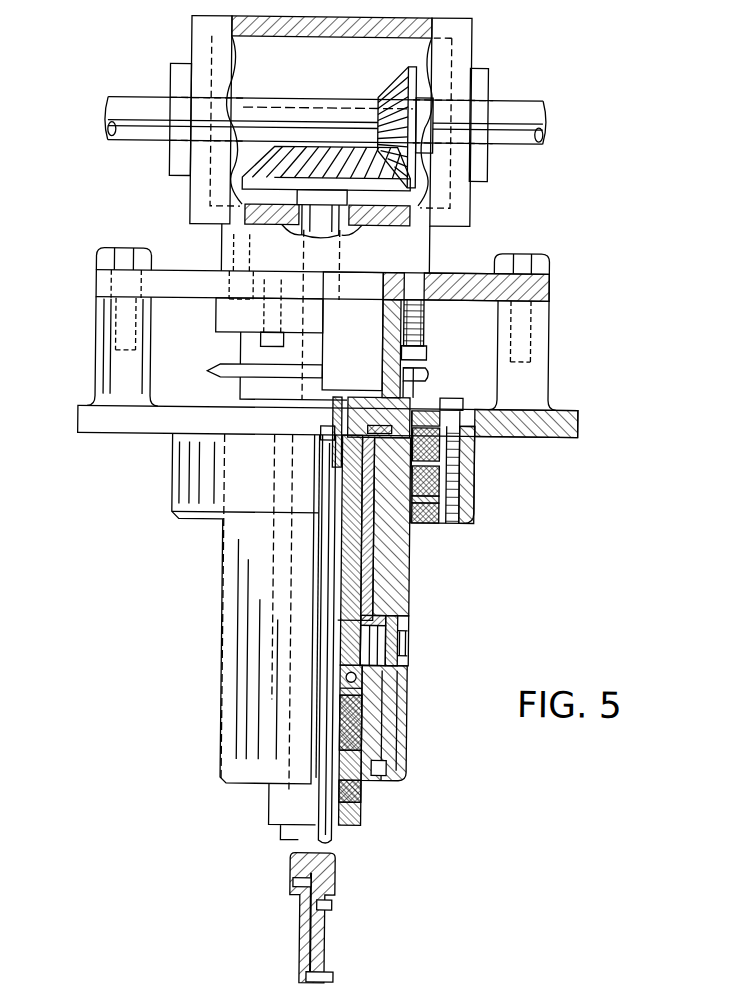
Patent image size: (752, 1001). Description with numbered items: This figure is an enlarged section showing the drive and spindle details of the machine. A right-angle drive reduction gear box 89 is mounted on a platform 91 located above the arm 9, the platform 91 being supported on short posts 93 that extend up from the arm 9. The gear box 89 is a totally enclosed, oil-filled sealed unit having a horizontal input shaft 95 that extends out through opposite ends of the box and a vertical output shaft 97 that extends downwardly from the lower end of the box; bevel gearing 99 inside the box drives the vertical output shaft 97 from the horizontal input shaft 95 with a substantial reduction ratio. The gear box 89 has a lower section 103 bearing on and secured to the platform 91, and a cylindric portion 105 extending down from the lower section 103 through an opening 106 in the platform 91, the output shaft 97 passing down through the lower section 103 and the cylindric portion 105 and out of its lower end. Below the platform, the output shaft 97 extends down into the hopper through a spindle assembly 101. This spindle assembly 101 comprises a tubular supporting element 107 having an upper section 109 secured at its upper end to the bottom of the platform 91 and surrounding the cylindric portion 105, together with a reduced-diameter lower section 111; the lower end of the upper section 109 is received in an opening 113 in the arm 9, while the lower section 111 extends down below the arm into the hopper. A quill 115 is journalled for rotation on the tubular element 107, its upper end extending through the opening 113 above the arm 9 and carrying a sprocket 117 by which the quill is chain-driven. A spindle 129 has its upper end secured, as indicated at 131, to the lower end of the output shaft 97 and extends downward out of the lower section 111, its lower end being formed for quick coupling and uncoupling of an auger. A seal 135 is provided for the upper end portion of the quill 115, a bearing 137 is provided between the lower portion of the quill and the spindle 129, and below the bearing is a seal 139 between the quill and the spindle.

The arm 9 is at (80, 419).
The right-angle drive reduction gear box 89 is at (472, 43).
The platform 91 is at (98, 285).
The short posts 93 is at (96, 356).
The horizontal input shaft 95 is at (512, 144).
The vertical output shaft 97 is at (345, 250).
The bevel gearing 99 is at (384, 80).
The spindle assembly 101 is at (222, 648).
The lower section 103 is at (428, 262).
The cylindric portion 105 is at (420, 318).
The opening 106 is at (388, 283).
The tubular supporting element 107 is at (240, 352).
The upper section 109 is at (420, 360).
The reduced-diameter lower section 111 is at (368, 605).
The opening 113 is at (430, 397).
The quill 115 is at (402, 576).
The sprocket 117 is at (212, 374).
The spindle 129 is at (332, 623).
The securing of spindle to output shaft 131 is at (324, 438).
The seal 135 is at (472, 493).
The bearing 137 is at (394, 681).
The seal 139 is at (374, 735).